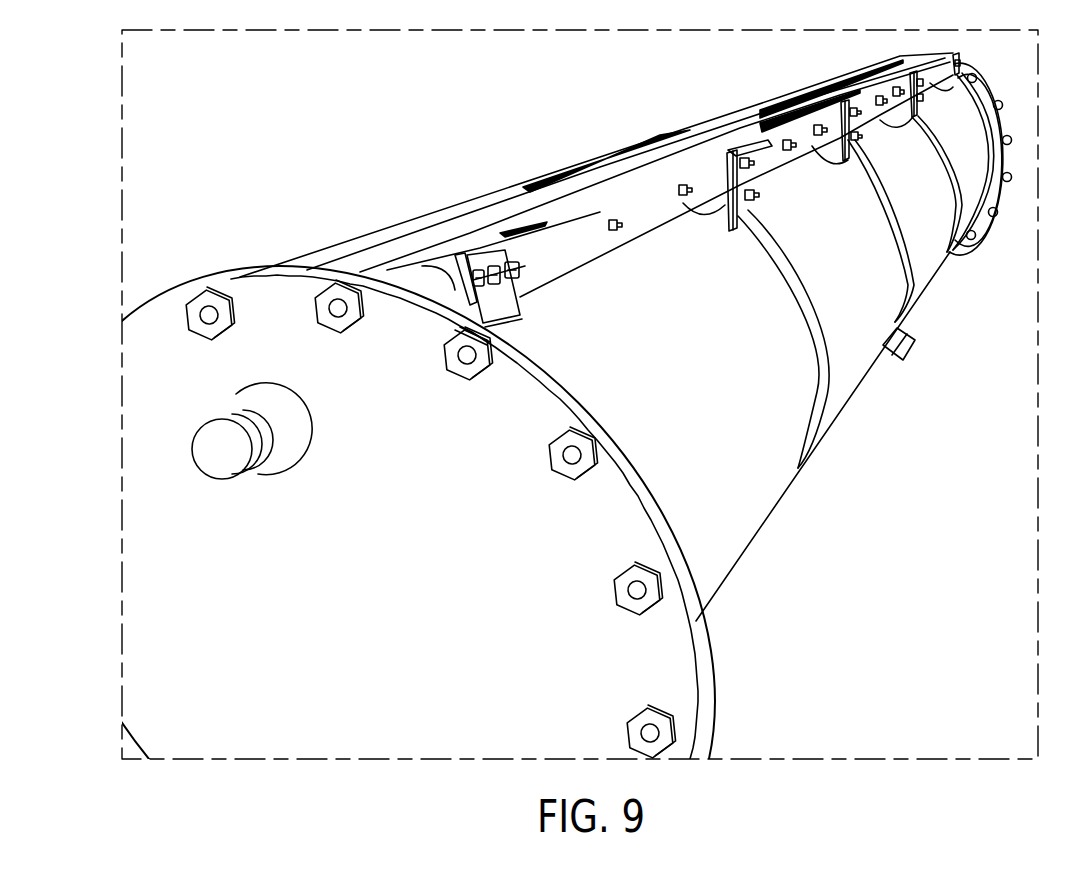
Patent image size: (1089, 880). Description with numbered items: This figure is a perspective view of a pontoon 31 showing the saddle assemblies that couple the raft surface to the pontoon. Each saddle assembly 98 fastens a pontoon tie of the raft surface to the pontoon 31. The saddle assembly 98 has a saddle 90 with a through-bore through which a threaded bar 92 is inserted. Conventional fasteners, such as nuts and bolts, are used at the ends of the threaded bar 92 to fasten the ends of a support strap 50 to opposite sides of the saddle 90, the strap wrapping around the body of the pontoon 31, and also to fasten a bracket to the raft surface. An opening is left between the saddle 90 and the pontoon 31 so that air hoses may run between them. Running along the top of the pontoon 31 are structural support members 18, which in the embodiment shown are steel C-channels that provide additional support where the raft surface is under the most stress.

The structural support member 18 is at (585, 248).
The pontoon 31 is at (862, 380).
The support strap 50 is at (805, 468).
The saddle 90 is at (727, 222).
The threaded bar 92 is at (757, 198).
The saddle assembly 98 is at (774, 183).